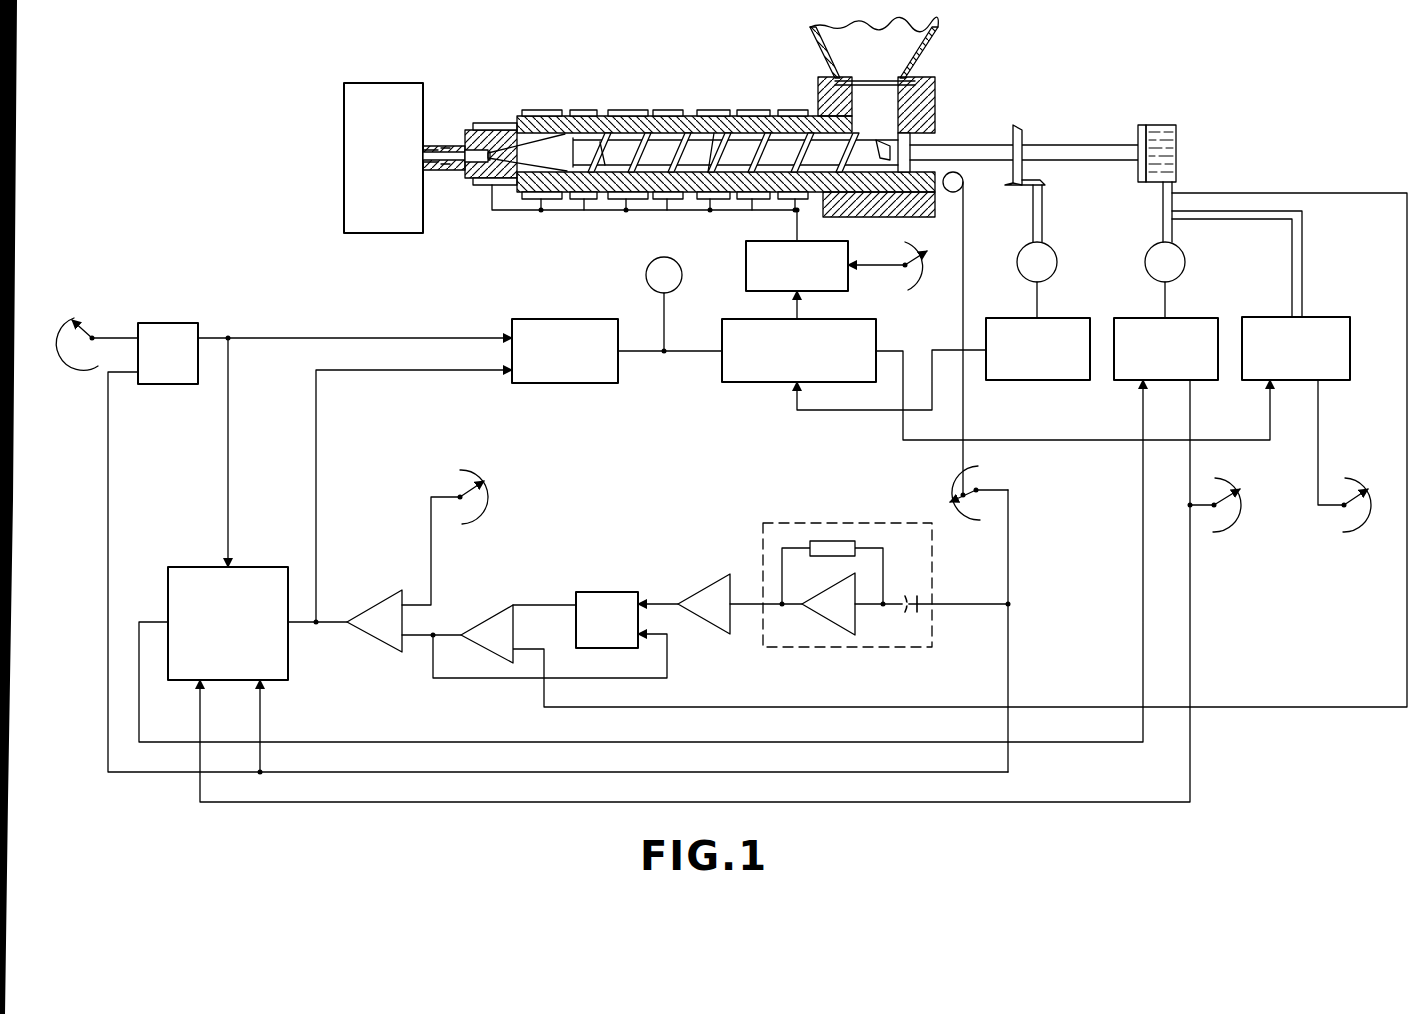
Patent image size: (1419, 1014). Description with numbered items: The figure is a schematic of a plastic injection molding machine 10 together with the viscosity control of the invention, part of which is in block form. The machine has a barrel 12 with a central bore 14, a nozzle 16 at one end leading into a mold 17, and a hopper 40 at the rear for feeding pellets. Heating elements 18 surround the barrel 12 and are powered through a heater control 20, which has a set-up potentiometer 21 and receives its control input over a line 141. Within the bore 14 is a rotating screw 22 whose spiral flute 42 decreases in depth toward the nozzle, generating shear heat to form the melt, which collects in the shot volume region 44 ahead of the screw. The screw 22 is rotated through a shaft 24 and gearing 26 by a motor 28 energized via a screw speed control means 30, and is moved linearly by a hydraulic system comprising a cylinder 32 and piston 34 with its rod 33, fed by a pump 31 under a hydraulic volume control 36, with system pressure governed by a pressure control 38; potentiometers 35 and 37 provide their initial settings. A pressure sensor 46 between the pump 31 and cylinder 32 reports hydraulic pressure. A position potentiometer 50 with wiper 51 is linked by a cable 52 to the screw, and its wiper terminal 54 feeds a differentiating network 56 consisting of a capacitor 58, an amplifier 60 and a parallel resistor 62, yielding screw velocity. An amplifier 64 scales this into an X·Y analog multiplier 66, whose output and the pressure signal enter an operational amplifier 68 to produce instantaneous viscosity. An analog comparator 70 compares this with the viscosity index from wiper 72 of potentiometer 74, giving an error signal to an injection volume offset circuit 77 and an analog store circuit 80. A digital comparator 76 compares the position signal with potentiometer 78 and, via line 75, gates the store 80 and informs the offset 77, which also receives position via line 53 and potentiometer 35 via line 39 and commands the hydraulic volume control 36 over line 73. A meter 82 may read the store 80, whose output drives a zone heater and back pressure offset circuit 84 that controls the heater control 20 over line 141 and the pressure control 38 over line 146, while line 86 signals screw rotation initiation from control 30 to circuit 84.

The injection molding machine 10 is at (740, 89).
The barrel 12 is at (612, 116).
The bore 14 is at (660, 134).
The nozzle 16 is at (461, 126).
The mold 17 is at (408, 83).
The heating elements 18 is at (559, 111).
The heater control 20 is at (850, 244).
The potentiometer 21 is at (926, 280).
The rotating screw 22 is at (655, 160).
The shaft 24 is at (981, 144).
The gearing 26 is at (1013, 174).
The motor 28 is at (1057, 263).
The screw speed control means 30 is at (1002, 320).
The pump 31 is at (1145, 265).
The cylinder 32 is at (1178, 136).
The piston rod 33 is at (1160, 232).
The piston 34 is at (1138, 126).
The potentiometer 35 is at (1240, 512).
The hydraulic volume control 36 is at (1220, 318).
The potentiometer 37 is at (1356, 484).
The pressure control 38 is at (1329, 312).
The line 39 is at (198, 720).
The hopper 40 is at (938, 30).
The spiral flute 42 is at (714, 170).
The shot volume region 44 is at (520, 158).
The pressure sensor 46 is at (1163, 192).
The position potentiometer 50 is at (948, 478).
The wiper 51 is at (978, 514).
The cable 52 is at (971, 415).
The line 53 is at (262, 718).
The wiper terminal 54 is at (976, 486).
The differentiating network 56 is at (844, 523).
The capacitor 58 is at (904, 614).
The amplifier 60 is at (814, 624).
The resistor 62 is at (816, 558).
The amplifier 64 is at (700, 586).
The X·Y analog multiplier 66 is at (606, 592).
The operational amplifier 68 is at (478, 620).
The analog comparator 70 is at (376, 638).
The wiper 72 is at (456, 484).
The line 73 is at (1142, 594).
The potentiometer 74 is at (486, 480).
The line 75 is at (228, 444).
The digital comparator 76 is at (172, 323).
The injection volume offset circuit 77 is at (186, 567).
The potentiometer 78 is at (84, 316).
The analog store circuit 80 is at (560, 320).
The meter 82 is at (646, 278).
The zone heater and back pressure offset circuit 84 is at (876, 330).
The line 86 is at (852, 410).
The signal line 141 is at (802, 308).
The signal line 146 is at (1092, 440).